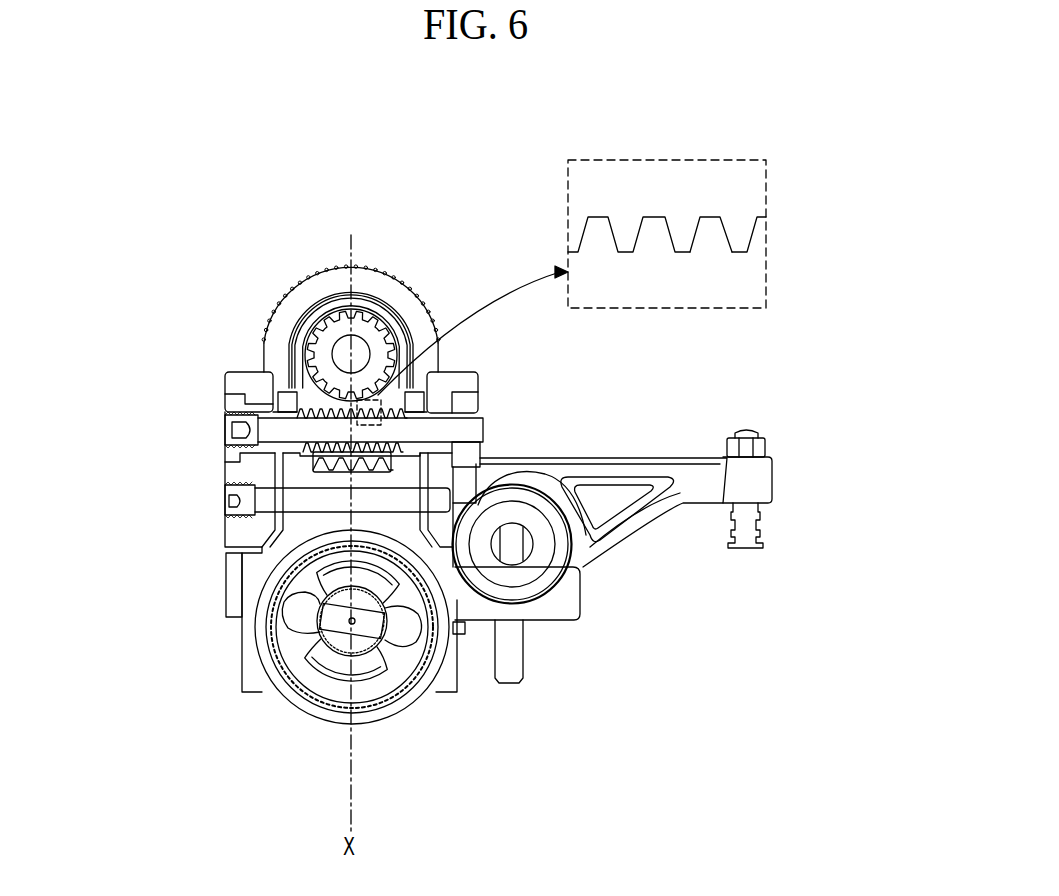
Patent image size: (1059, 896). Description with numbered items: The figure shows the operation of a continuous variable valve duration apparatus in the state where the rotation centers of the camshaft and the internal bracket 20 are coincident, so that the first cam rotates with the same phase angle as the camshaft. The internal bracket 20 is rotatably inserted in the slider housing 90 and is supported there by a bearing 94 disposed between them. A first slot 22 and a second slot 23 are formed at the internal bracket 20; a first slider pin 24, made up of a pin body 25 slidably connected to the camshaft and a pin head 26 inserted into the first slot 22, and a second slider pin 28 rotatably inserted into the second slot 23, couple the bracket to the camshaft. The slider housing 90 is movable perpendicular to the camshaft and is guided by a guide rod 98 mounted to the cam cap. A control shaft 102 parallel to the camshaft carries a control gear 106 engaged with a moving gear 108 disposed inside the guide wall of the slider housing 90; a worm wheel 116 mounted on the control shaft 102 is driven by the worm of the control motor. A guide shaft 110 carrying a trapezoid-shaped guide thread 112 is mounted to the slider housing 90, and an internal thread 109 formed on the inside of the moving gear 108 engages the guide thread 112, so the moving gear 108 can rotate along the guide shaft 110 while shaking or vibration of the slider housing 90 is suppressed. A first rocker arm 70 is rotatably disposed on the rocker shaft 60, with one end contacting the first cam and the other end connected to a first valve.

The internal bracket 20 is at (323, 682).
The first slot 22 is at (420, 640).
The second slot 23 is at (284, 610).
The first slider pin 24 is at (376, 685).
The pin body 25 is at (362, 628).
The pin head 26 is at (402, 637).
The second slider pin 28 is at (298, 620).
The rocker shaft 60 is at (537, 568).
The first rocker arm 70 is at (647, 458).
The slider housing 90 is at (470, 372).
The bearing 94 is at (338, 702).
The guide rod 98 is at (270, 502).
The control shaft 102 is at (358, 345).
The control gear 106 is at (377, 341).
The moving gear 108 is at (322, 403).
The internal thread 109 is at (705, 216).
The guide shaft 110 is at (440, 428).
The guide thread 112 is at (248, 430).
The worm wheel 116 is at (312, 283).